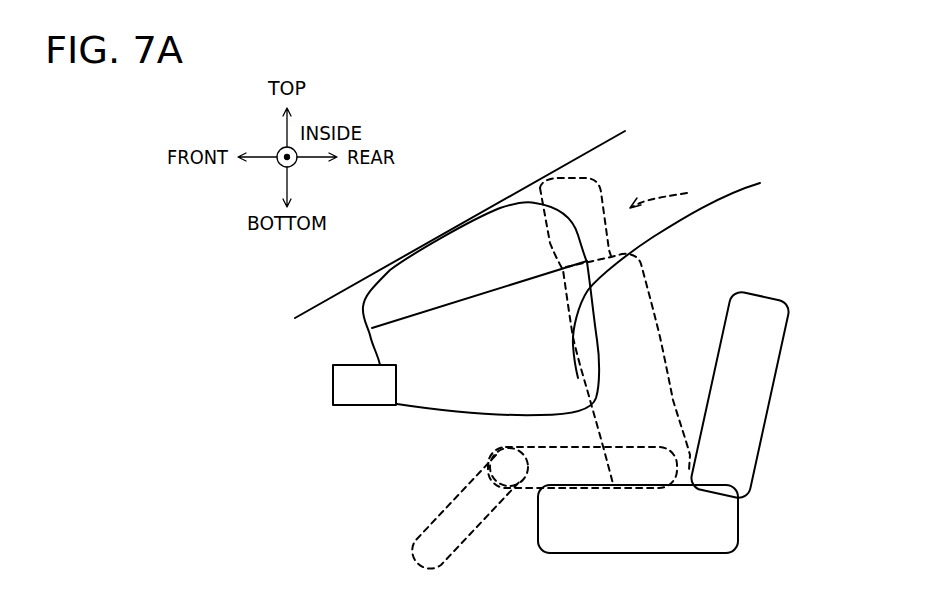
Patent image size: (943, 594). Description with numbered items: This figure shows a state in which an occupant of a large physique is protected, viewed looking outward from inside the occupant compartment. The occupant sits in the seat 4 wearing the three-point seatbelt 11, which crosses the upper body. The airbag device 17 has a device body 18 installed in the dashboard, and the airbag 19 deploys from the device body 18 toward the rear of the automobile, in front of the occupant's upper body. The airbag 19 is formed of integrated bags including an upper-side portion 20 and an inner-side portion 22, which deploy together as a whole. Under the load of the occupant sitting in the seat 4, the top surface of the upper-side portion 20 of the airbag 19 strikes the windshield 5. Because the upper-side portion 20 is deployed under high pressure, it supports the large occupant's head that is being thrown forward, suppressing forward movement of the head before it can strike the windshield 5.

The seat 4 is at (725, 513).
The windshield 5 is at (492, 208).
The three-point seatbelt 11 is at (745, 197).
The airbag device 17 is at (403, 346).
The device body 18 is at (363, 378).
The airbag 19 is at (440, 346).
The upper-side portion 20 is at (490, 272).
The inner-side portion 22 is at (485, 393).